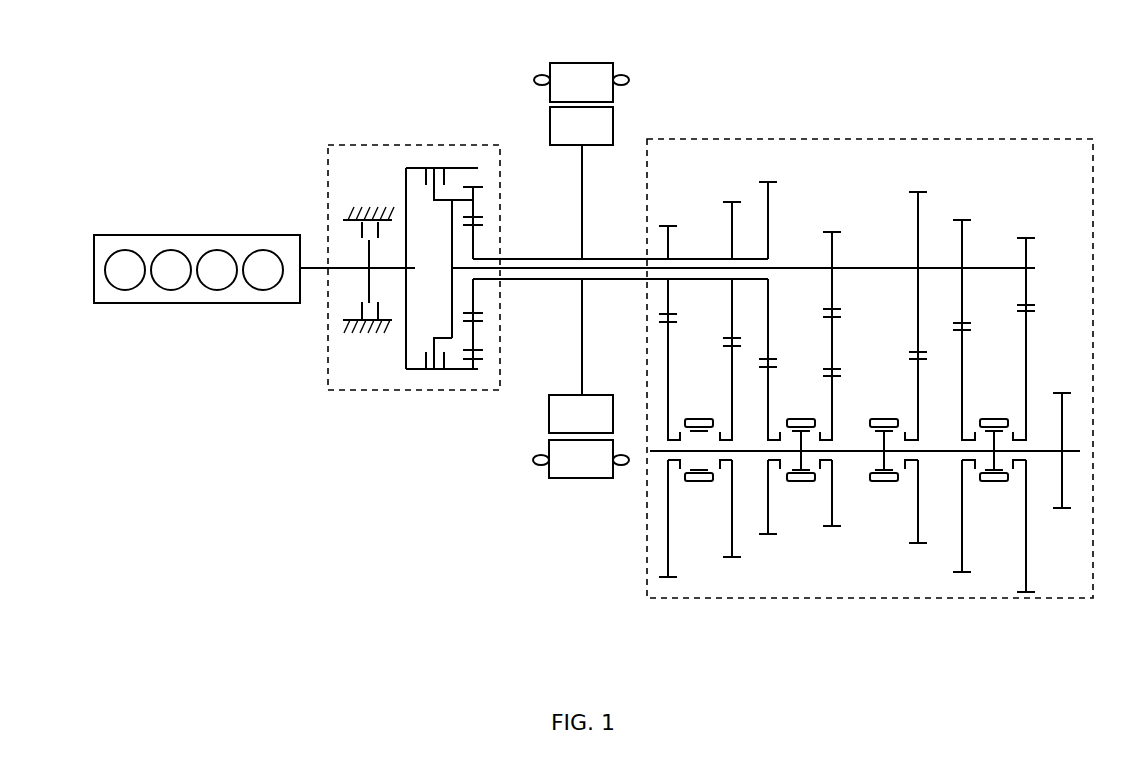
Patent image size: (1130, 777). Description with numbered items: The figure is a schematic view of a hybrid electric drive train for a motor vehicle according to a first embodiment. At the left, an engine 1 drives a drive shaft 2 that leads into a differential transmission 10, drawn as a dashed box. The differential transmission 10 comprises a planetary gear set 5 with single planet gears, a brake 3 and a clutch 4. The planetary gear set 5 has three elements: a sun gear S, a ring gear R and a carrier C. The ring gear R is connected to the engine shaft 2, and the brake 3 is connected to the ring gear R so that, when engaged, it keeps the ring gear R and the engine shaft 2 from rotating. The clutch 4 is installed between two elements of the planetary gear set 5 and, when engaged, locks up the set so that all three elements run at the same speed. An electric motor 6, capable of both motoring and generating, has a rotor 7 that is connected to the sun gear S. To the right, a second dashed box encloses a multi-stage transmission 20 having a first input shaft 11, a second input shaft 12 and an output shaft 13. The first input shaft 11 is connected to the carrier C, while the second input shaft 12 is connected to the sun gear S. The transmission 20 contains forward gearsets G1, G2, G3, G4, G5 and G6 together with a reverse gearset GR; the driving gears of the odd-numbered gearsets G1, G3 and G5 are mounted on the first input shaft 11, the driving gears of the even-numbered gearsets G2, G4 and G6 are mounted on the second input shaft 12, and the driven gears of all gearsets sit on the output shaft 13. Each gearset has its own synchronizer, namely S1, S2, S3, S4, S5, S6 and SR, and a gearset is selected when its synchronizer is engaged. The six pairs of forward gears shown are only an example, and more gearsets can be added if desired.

The engine 1 is at (240, 232).
The drive shaft 2 is at (315, 262).
The brake 3 is at (369, 237).
The clutch 4 is at (433, 184).
The planetary gear set 5 is at (470, 181).
The electric motor 6 is at (576, 62).
The rotor 7 is at (615, 124).
The differential transmission 10 is at (389, 394).
The first input shaft 11 is at (805, 282).
The second input shaft 12 is at (708, 270).
The output shaft 13 is at (1043, 447).
The multi-stage transmission 20 is at (643, 526).
The ring gear R is at (476, 172).
The carrier C is at (476, 203).
The sun gear S is at (476, 238).
The first forward gearset G1 is at (1027, 394).
The second forward gearset G2 is at (669, 386).
The third forward gearset G3 is at (962, 375).
The fourth forward gearset G4 is at (732, 363).
The fifth forward gearset G5 is at (918, 351).
The sixth forward gearset G6 is at (768, 343).
The reverse gearset GR is at (832, 362).
The synchronizer of first gearset S1 is at (1000, 490).
The synchronizer of second gearset S2 is at (692, 464).
The synchronizer of third gearset S3 is at (986, 464).
The synchronizer of fourth gearset S4 is at (707, 490).
The synchronizer of fifth gearset S5 is at (884, 464).
The synchronizer of sixth gearset S6 is at (793, 464).
The synchronizer of reverse gearset SR is at (809, 490).